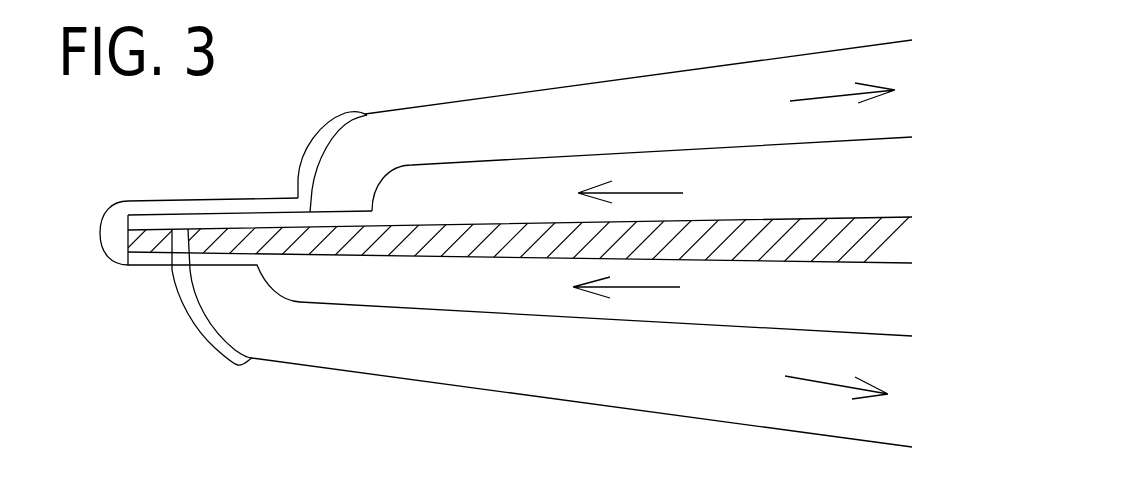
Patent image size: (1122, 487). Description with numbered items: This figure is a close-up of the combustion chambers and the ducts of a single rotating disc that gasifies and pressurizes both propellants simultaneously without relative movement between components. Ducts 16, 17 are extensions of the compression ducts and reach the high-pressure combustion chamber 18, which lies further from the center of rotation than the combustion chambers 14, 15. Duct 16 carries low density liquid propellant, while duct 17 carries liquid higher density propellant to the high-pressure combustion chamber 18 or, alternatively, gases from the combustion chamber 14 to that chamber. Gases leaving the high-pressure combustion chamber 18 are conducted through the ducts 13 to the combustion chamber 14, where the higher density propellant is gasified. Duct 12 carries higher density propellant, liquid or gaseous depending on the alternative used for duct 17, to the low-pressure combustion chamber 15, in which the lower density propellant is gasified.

The duct 12 is at (188, 297).
The duct 13 is at (307, 173).
The combustion chamber 14 is at (353, 173).
The low-pressure combustion chamber 15 is at (232, 293).
The duct 16 is at (155, 258).
The duct 17 is at (152, 218).
The high-pressure combustion chamber 18 is at (112, 233).